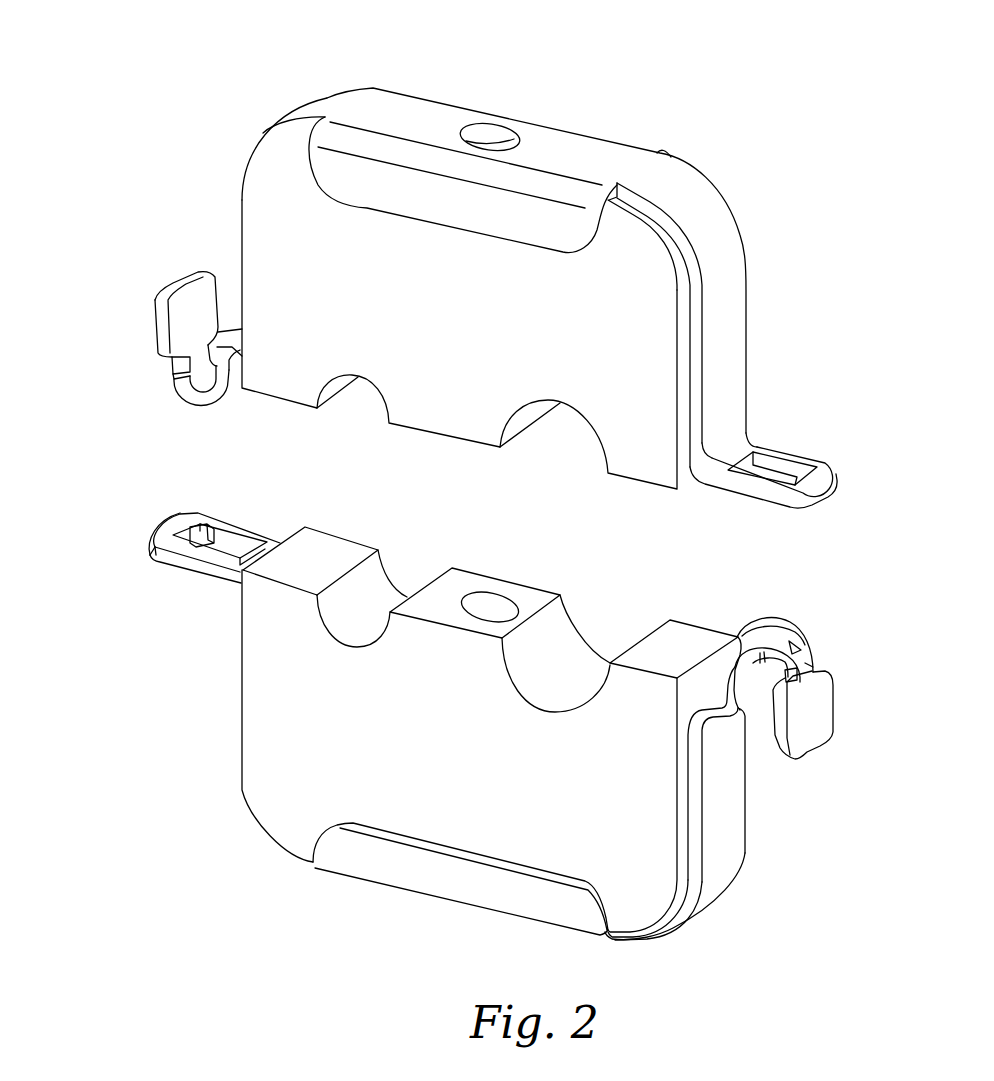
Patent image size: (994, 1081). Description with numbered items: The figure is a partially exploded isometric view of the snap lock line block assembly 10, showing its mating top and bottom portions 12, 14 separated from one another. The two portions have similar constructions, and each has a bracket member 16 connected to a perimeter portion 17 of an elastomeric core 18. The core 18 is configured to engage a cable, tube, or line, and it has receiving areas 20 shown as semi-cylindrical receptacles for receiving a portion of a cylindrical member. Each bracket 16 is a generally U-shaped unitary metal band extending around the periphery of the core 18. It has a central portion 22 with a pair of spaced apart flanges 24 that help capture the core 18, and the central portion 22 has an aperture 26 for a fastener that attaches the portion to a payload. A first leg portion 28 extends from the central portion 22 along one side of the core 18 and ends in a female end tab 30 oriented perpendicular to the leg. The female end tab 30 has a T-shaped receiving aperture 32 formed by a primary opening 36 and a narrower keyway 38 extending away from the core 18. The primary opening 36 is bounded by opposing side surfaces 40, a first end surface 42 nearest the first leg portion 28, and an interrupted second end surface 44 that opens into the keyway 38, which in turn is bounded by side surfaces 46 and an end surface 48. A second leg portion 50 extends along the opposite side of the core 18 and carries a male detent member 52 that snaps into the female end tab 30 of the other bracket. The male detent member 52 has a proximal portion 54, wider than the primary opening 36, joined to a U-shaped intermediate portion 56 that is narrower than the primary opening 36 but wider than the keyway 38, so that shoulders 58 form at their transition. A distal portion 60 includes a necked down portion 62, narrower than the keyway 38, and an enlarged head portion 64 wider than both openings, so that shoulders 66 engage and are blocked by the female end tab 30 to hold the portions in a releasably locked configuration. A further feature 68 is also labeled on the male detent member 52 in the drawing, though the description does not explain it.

The snap lock line block assembly 10 is at (722, 77).
The top portion 12 is at (268, 119).
The bottom portion 14 is at (248, 805).
The bracket member 16 is at (326, 98).
The perimeter portion 17 is at (242, 665).
The core 18 is at (258, 718).
The receiving areas 20 is at (507, 645).
The central portion 22 is at (600, 157).
The flanges 24 is at (499, 203).
The aperture 26 is at (496, 128).
The first leg portion 28 is at (737, 352).
The female end tab 30 is at (790, 449).
The T-shaped receiving aperture 32 is at (240, 566).
The primary opening 36 is at (818, 466).
The keyway 38 is at (812, 480).
The side surfaces 40 is at (243, 539).
The first end surface 42 is at (246, 541).
The interrupted second end surface 44 is at (226, 522).
The side surfaces 46 is at (187, 515).
The end surface 48 is at (172, 534).
The second leg portion 50 is at (240, 163).
The male detent member 52 is at (469, 515).
The proximal portion 54 is at (727, 713).
The U-shaped intermediate portion 56 is at (203, 406).
The shoulders 58 is at (727, 677).
The distal portion 60 is at (469, 522).
The necked down portion 62 is at (173, 365).
The head portion 64 is at (173, 325).
The shoulders 66 is at (173, 374).
The rib 68 is at (793, 641).